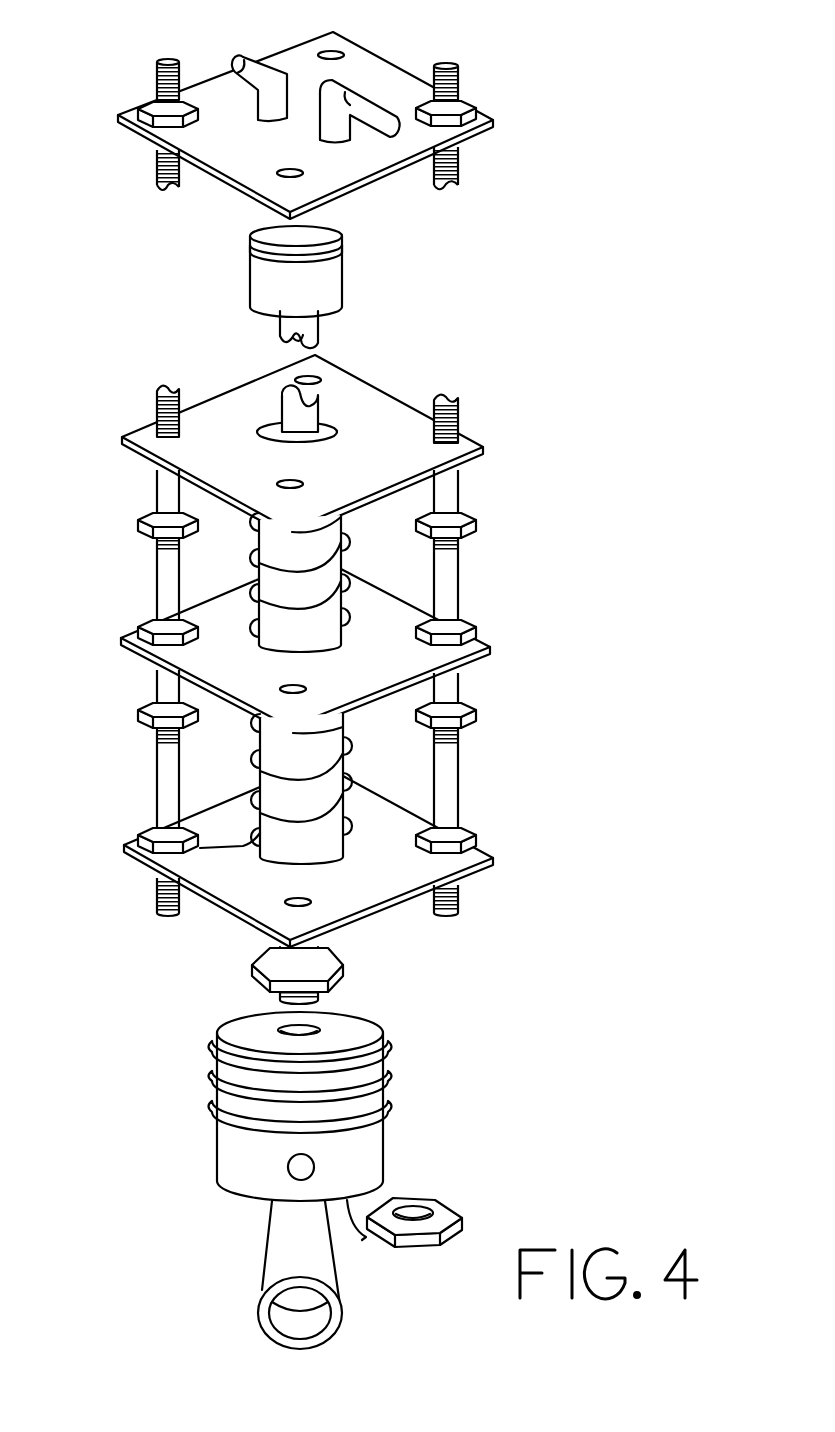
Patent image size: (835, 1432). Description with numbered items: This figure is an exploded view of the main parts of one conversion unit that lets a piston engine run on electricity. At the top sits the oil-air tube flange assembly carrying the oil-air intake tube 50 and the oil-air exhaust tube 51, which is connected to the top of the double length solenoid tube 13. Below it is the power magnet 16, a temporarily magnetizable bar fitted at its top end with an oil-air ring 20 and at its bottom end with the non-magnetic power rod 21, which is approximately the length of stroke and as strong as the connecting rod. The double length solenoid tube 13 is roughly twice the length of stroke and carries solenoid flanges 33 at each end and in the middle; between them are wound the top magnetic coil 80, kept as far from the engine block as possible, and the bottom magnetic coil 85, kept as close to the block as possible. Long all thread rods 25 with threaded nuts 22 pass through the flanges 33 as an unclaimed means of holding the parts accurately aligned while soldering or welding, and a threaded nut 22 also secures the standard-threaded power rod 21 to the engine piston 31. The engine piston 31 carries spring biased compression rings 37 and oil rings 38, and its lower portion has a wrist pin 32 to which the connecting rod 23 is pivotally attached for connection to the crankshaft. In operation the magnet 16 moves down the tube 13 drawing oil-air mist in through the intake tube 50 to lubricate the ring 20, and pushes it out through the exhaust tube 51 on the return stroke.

The oil-air intake tube 50 is at (243, 62).
The oil-air exhaust tube 51 is at (348, 102).
The power magnet 16 is at (317, 290).
The oil-air ring 20 is at (323, 262).
The power rod 21 is at (310, 342).
The solenoid flange 33 is at (233, 467).
The double length solenoid tube 13 is at (303, 750).
The bottom magnetic coil 85 is at (327, 812).
The top magnetic coil 80 is at (317, 562).
The all thread rod 25 is at (446, 497).
The threaded nut 22 is at (463, 633).
The engine piston 31 is at (250, 1158).
The engine piston compression ring 37 is at (233, 1080).
The engine piston oil ring 38 is at (390, 1088).
The wrist pin 32 is at (305, 1167).
The connecting rod 23 is at (292, 1263).